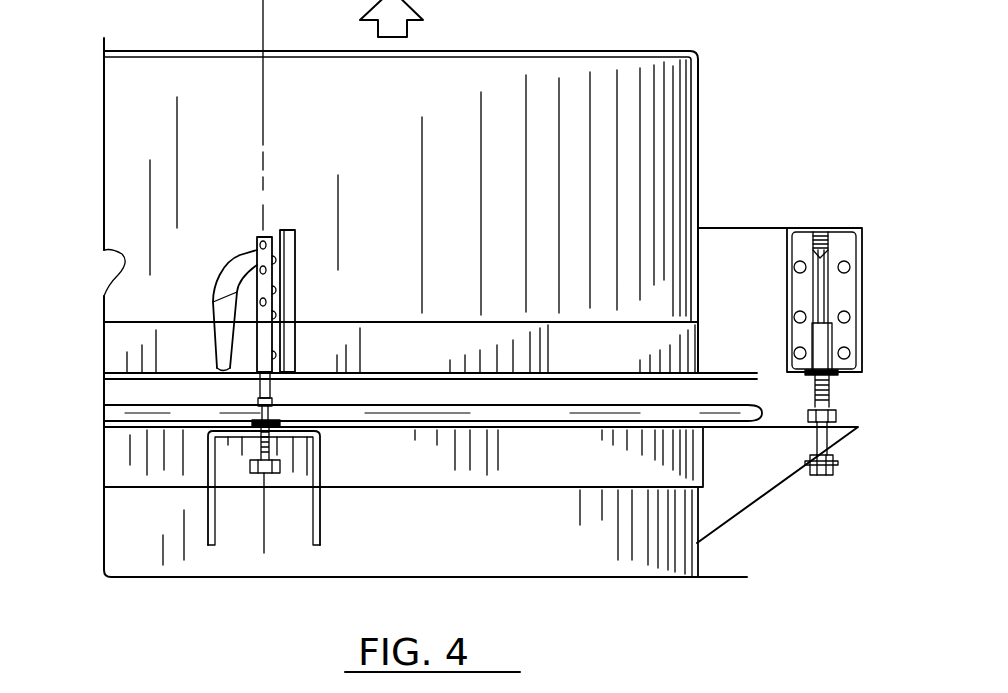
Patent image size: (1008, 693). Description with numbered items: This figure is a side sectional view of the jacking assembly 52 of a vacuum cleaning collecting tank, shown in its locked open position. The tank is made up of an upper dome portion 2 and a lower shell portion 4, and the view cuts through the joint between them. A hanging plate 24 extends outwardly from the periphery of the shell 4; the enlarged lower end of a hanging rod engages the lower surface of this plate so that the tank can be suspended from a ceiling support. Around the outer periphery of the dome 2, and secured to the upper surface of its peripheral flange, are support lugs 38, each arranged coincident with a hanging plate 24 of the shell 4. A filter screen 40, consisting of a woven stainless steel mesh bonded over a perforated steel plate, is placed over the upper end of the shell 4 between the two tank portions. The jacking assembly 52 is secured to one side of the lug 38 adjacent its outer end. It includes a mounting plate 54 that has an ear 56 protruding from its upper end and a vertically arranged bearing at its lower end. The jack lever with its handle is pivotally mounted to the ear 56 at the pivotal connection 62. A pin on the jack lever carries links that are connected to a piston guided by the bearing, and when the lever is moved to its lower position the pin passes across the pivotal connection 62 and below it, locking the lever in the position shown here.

The dome portion 2 is at (408, 101).
The shell portion 4 is at (140, 578).
The hanging plate 24 is at (727, 523).
The support lug 38 is at (723, 228).
The filter screen 40 is at (96, 412).
The jacking assembly 52 is at (198, 292).
The mounting plate 54 is at (284, 230).
The ear 56 is at (273, 232).
The pivotal connection 62 is at (257, 242).